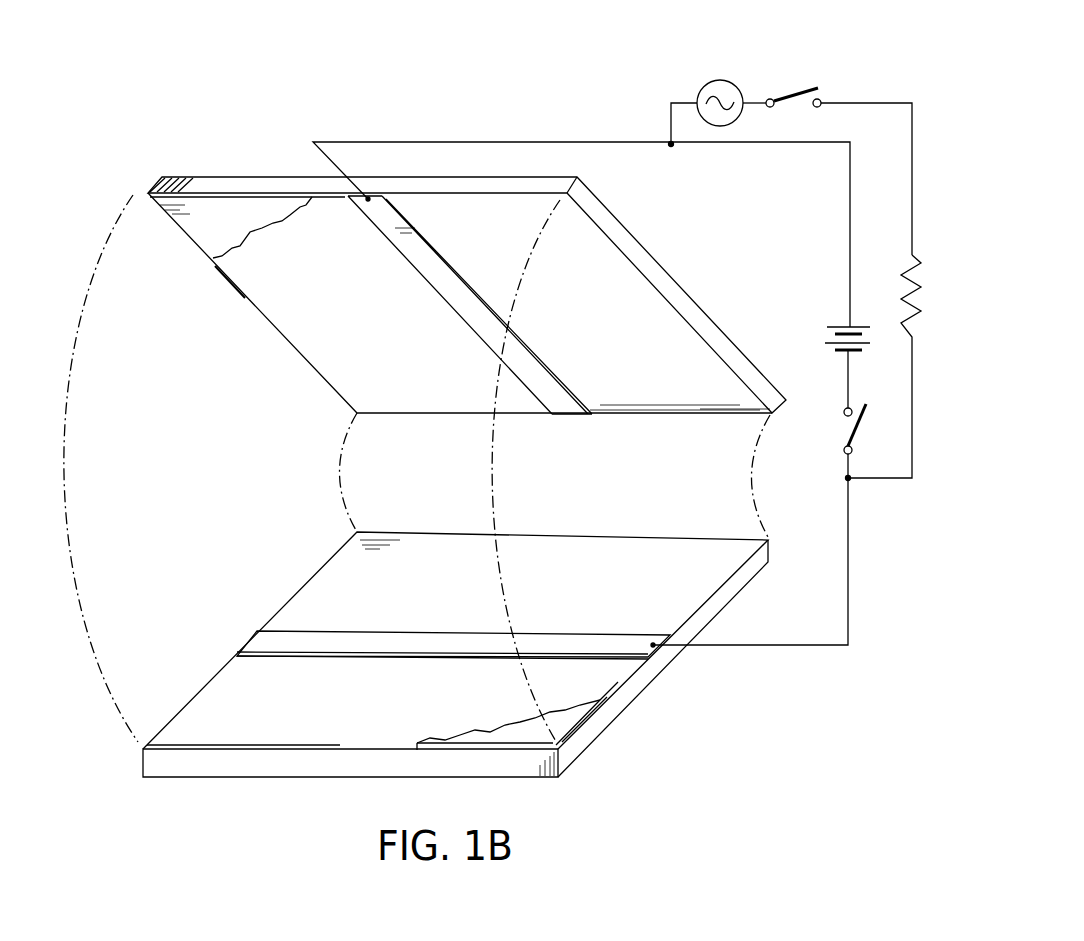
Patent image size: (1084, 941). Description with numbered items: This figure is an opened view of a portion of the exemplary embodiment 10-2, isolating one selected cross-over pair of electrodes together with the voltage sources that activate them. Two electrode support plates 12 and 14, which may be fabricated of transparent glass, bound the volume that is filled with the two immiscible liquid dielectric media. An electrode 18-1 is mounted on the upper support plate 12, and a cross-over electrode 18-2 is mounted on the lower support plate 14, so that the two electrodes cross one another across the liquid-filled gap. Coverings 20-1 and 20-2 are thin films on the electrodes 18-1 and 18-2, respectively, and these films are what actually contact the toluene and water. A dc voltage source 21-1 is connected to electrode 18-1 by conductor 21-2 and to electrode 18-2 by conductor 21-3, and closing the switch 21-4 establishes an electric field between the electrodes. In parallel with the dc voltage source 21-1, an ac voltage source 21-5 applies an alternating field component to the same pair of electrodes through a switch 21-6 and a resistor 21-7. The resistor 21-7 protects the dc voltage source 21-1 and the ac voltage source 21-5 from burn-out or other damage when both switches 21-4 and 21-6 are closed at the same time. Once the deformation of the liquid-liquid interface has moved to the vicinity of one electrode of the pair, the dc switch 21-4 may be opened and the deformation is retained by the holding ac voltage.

The display device 10-2 is at (722, 781).
The electrode support plate 12 is at (203, 178).
The electrode support plate 14 is at (168, 772).
The electrode 18-1 is at (413, 248).
The cross-over electrode 18-2 is at (568, 638).
The covering 20-1 is at (197, 228).
The covering 20-2 is at (567, 729).
The dc voltage source 21-1 is at (838, 324).
The conductor 21-2 is at (487, 143).
The conductor 21-3 is at (793, 648).
The switch 21-4 is at (857, 428).
The ac voltage source 21-5 is at (707, 85).
The switch 21-6 is at (815, 85).
The resistor 21-7 is at (907, 272).